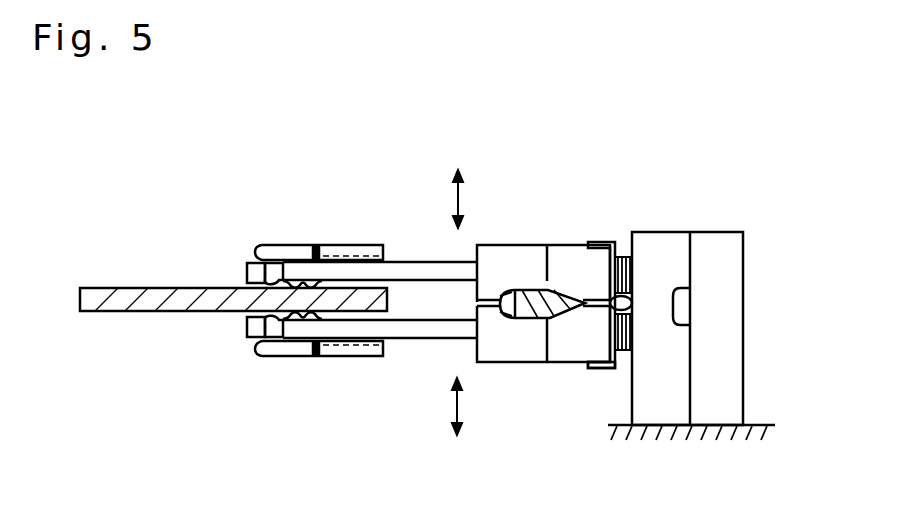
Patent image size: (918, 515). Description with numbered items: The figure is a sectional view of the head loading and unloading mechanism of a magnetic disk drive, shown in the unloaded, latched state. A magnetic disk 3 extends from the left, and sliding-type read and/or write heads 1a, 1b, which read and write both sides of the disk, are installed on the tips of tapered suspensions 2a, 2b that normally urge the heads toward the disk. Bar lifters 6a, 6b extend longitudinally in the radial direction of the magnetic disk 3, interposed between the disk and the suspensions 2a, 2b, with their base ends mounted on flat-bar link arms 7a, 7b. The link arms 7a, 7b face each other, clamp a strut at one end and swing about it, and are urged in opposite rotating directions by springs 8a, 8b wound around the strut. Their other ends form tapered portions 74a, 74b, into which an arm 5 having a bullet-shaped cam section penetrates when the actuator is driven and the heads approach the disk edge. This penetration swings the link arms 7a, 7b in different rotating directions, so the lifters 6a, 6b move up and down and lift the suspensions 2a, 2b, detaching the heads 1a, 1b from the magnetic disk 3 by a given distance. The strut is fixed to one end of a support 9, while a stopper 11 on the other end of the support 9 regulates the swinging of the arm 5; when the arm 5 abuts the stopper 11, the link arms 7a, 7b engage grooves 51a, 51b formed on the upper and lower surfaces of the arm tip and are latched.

The read and/or write head 1a is at (247, 268).
The read and/or write head 1b is at (247, 330).
The tapered suspension 2a is at (340, 247).
The tapered suspension 2b is at (292, 357).
The magnetic disk 3 is at (188, 313).
The arm 5 is at (513, 320).
The bar lifter 6a is at (432, 262).
The bar lifter 6b is at (395, 340).
The link arm 7a is at (532, 245).
The link arm 7b is at (530, 362).
The spring 8a is at (615, 242).
The spring 8b is at (595, 368).
The support 9 is at (743, 310).
The stopper 11 is at (690, 300).
The groove 51a is at (514, 290).
The groove 51b is at (520, 318).
The tapered portion 74a is at (566, 297).
The tapered portion 74b is at (552, 320).